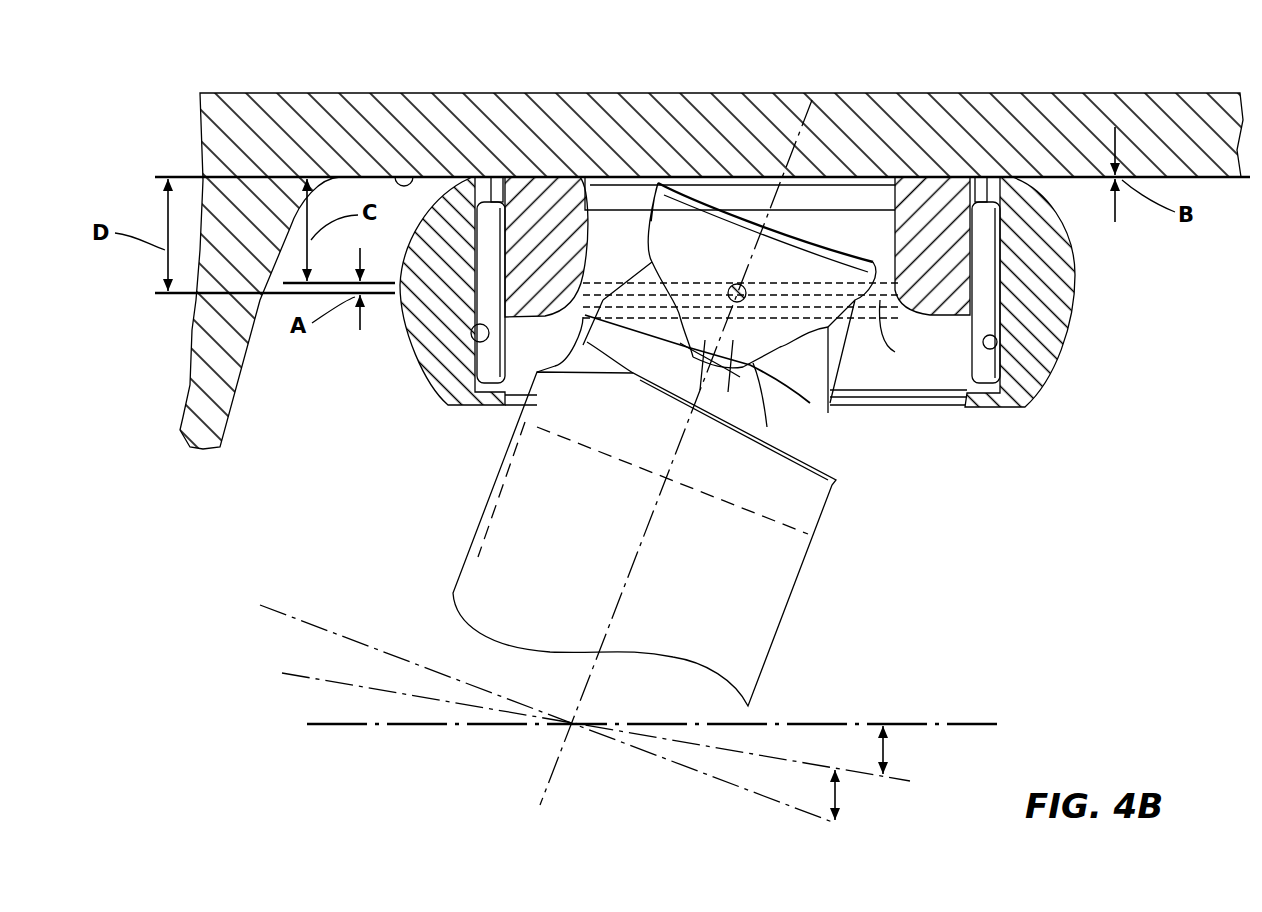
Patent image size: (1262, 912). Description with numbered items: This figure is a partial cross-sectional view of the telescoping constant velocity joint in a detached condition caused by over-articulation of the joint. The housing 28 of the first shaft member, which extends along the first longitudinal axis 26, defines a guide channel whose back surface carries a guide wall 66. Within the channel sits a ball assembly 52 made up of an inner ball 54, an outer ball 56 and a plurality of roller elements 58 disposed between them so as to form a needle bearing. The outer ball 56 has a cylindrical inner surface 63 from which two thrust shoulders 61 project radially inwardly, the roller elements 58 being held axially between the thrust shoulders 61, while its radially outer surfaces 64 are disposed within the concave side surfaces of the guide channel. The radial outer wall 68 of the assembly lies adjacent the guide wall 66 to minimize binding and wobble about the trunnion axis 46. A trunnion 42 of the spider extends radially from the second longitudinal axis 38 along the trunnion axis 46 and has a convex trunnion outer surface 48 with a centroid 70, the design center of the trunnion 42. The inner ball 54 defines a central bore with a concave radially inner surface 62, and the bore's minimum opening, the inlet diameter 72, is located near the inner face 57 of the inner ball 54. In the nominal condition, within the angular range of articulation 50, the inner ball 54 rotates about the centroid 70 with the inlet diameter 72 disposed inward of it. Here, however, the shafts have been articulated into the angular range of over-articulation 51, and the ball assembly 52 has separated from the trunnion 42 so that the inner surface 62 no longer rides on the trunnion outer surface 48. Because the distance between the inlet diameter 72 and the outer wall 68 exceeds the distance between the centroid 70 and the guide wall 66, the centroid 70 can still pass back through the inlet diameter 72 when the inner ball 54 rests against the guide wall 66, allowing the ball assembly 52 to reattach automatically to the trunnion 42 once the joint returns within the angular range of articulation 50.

The housing 28 is at (715, 100).
The guide wall 66 is at (394, 176).
The thrust shoulders 61 is at (484, 201).
The radial outer wall 68 is at (527, 177).
The radially inner surface 62 is at (606, 237).
The inner face 57 is at (575, 345).
The inner ball 54 is at (930, 188).
The roller elements 58 is at (1000, 222).
The outer ball 56 is at (1035, 370).
The cylindrical inner surface 63 is at (470, 345).
The ball assembly 52 is at (957, 416).
The trunnion 42 is at (793, 273).
The trunnion axis 46 is at (660, 503).
The trunnion outer surface 48 is at (720, 398).
The centroid 70 is at (735, 288).
The inlet diameter 72 is at (895, 352).
The second longitudinal axis 38 is at (307, 620).
The angular range of articulation 50 is at (886, 765).
The first longitudinal axis 26 is at (940, 722).
The angular range of over-articulation 51 is at (845, 806).
The radially outer surfaces 64 is at (425, 376).